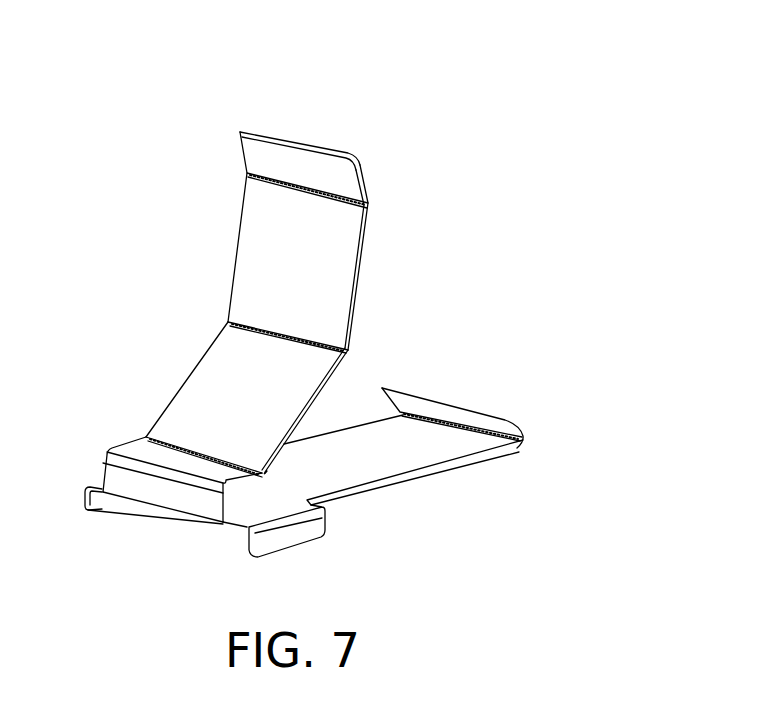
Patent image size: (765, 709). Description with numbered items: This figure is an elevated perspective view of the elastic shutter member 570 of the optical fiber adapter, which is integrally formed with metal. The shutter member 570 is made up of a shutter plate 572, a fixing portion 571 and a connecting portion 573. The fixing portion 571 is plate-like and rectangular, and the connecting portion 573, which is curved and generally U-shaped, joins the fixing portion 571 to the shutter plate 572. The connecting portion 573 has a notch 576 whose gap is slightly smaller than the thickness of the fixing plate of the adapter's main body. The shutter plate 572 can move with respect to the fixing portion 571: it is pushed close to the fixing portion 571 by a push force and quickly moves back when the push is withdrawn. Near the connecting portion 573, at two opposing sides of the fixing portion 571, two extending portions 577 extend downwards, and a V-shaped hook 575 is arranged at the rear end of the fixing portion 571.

The shutter member 570 is at (440, 108).
The fixing portion 571 is at (395, 460).
The shutter plate 572 is at (283, 160).
The connecting portion 573 is at (142, 487).
The V-shaped hook 575 is at (483, 412).
The notch 576 is at (232, 505).
The extending portions 577 is at (98, 503).